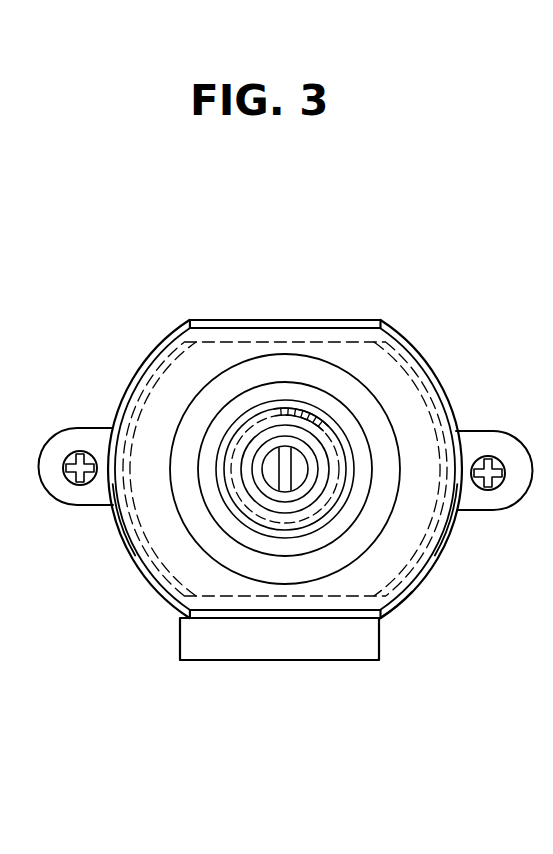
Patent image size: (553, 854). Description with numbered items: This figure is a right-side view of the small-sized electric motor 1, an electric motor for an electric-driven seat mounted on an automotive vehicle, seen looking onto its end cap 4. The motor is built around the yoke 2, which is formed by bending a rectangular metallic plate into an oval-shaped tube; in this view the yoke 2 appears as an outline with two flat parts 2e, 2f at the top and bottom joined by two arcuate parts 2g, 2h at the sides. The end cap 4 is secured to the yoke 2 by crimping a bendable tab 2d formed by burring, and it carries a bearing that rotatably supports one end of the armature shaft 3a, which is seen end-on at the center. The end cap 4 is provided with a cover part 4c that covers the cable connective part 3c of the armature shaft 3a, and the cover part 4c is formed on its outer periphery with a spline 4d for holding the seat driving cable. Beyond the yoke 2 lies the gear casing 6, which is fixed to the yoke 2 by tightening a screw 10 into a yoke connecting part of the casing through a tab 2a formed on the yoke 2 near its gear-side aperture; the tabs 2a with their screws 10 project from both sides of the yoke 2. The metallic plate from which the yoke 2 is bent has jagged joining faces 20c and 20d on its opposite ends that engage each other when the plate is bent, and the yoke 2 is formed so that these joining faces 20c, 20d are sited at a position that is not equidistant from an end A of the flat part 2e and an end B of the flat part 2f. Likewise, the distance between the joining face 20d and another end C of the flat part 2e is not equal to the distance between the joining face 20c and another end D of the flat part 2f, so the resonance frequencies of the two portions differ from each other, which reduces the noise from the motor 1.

The small-sized electric motor 1 is at (433, 297).
The yoke 2 is at (270, 320).
The tab 2a is at (74, 428).
The bendable tab 2d is at (440, 527).
The flat part 2e is at (308, 320).
The flat part 2f is at (268, 620).
The arcuate part 2g is at (133, 548).
The arcuate part 2h is at (412, 592).
The armature shaft 3a is at (286, 483).
The cable connective part 3c is at (311, 474).
The end cap 4 is at (223, 323).
The cover part 4c is at (330, 448).
The spline 4d is at (324, 418).
The gear casing 6 is at (348, 655).
The screw 10 is at (65, 484).
The joining face 20c is at (130, 385).
The joining face 20d is at (148, 372).
The end of the flat part 2e A is at (193, 319).
The end of the flat part 2f B is at (187, 621).
The another end of the flat part 2e C is at (380, 321).
The another end of the flat part 2f D is at (380, 621).